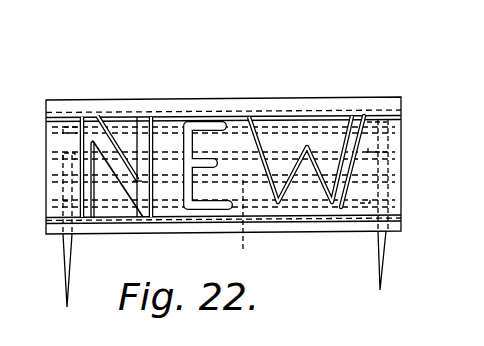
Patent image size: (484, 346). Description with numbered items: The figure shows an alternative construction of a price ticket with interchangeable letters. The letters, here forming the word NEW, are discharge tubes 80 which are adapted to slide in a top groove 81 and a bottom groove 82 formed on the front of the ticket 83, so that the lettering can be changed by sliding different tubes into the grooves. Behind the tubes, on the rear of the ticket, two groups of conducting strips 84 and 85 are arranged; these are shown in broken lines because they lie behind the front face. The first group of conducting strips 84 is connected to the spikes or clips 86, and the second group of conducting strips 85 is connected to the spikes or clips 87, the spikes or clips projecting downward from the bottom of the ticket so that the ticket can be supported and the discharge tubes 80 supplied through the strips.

The discharge tubes 80 is at (160, 122).
The top groove 81 is at (123, 113).
The bottom groove 82 is at (232, 214).
The ticket 83 is at (302, 74).
The conducting strips 84 is at (337, 117).
The conducting strips 85 is at (368, 150).
The spikes or clips 86 is at (386, 268).
The spikes or clips 87 is at (72, 273).